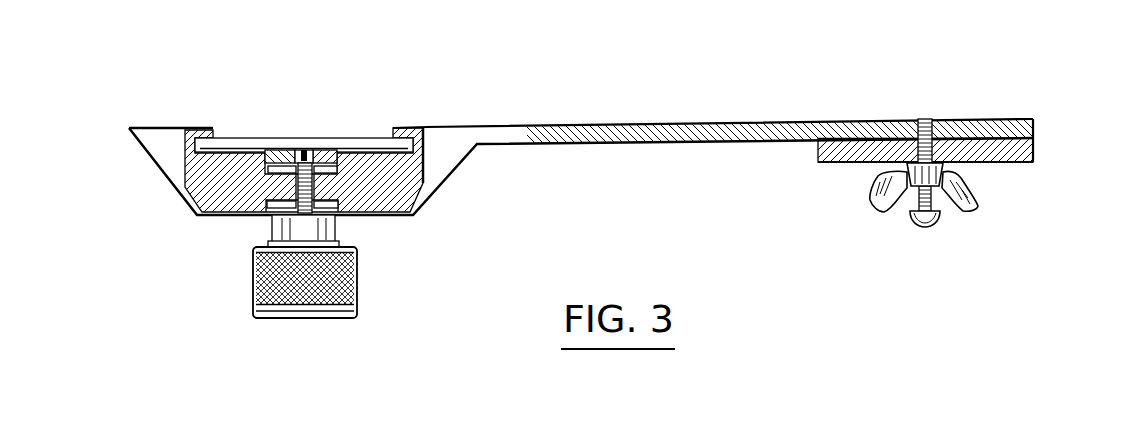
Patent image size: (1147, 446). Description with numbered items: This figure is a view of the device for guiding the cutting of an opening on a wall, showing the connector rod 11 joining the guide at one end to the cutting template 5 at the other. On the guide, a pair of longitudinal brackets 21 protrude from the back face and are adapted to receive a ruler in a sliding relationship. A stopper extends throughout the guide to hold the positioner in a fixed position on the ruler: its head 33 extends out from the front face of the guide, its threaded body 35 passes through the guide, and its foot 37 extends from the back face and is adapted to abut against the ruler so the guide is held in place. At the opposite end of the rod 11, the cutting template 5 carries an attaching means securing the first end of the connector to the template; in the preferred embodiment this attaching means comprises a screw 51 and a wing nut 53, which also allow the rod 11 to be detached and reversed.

The cutting template 5 is at (1046, 133).
The rod 11 is at (641, 116).
The longitudinal brackets 21 is at (218, 146).
The head 33 is at (247, 307).
The threaded body 35 is at (360, 185).
The foot 37 is at (282, 150).
The screw 51 is at (920, 229).
The wing nut 53 is at (978, 206).